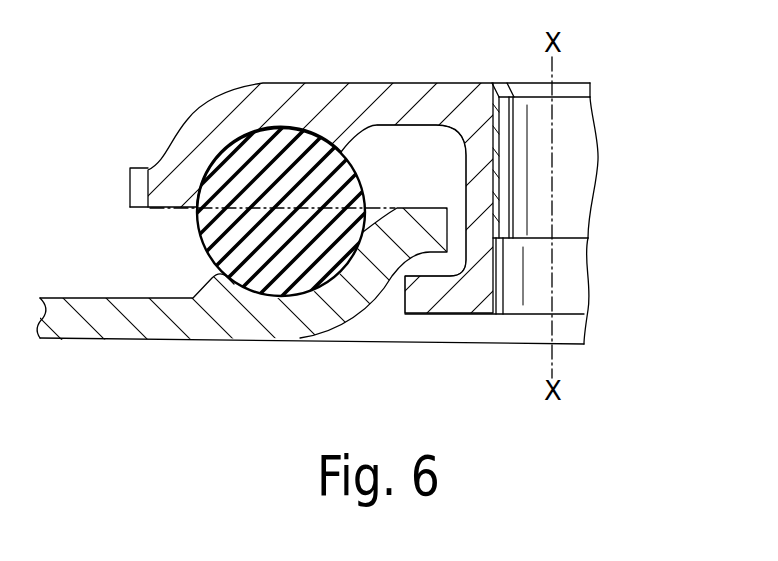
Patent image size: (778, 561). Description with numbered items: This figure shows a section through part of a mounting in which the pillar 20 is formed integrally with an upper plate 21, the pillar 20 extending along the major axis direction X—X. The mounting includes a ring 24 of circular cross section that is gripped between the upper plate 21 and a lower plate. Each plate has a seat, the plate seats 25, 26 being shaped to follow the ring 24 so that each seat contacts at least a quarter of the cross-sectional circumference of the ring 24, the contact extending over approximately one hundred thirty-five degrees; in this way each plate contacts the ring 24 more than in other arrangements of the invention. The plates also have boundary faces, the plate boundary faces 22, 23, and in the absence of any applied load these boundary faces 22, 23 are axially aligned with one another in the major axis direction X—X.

The pillar 20 is at (480, 187).
The upper plate 21 is at (397, 97).
The plate boundary face 22 is at (422, 208).
The plate boundary face 23 is at (155, 208).
The ring 24 is at (247, 265).
The plate seat 25 is at (348, 305).
The plate seat 26 is at (247, 126).